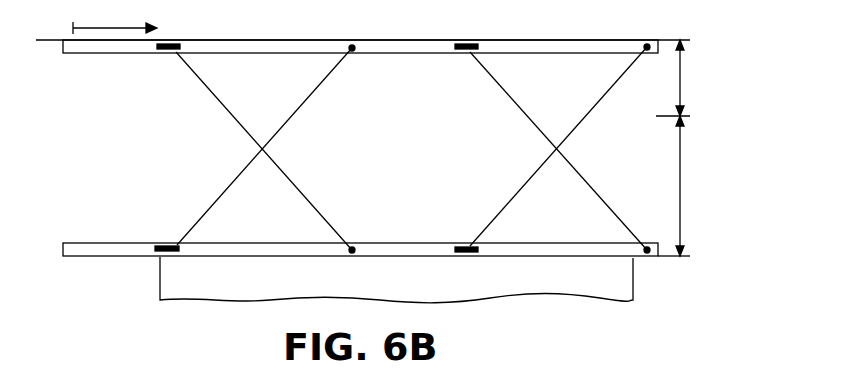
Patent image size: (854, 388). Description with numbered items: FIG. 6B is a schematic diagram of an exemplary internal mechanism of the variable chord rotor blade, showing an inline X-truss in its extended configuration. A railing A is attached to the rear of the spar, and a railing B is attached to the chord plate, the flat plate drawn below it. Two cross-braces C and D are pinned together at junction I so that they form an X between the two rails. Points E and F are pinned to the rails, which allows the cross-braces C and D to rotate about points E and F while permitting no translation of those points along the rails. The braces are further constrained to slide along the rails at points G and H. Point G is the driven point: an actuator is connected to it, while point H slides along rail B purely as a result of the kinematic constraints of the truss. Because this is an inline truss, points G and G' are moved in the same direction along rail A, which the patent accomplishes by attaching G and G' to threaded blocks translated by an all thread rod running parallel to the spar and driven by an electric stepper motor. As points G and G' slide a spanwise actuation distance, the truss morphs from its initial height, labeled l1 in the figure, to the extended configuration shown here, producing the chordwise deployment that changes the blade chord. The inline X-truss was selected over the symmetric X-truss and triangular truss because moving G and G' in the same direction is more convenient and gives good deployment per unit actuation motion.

The railing A is at (363, 37).
The railing B is at (366, 273).
The cross-brace C is at (412, 146).
The cross-brace D is at (411, 151).
The pinned point E is at (355, 63).
The pinned point F is at (353, 238).
The driven point G is at (164, 63).
The driven point G' is at (463, 63).
The sliding point H is at (164, 237).
The junction I is at (258, 122).
The initial length l1 is at (679, 78).